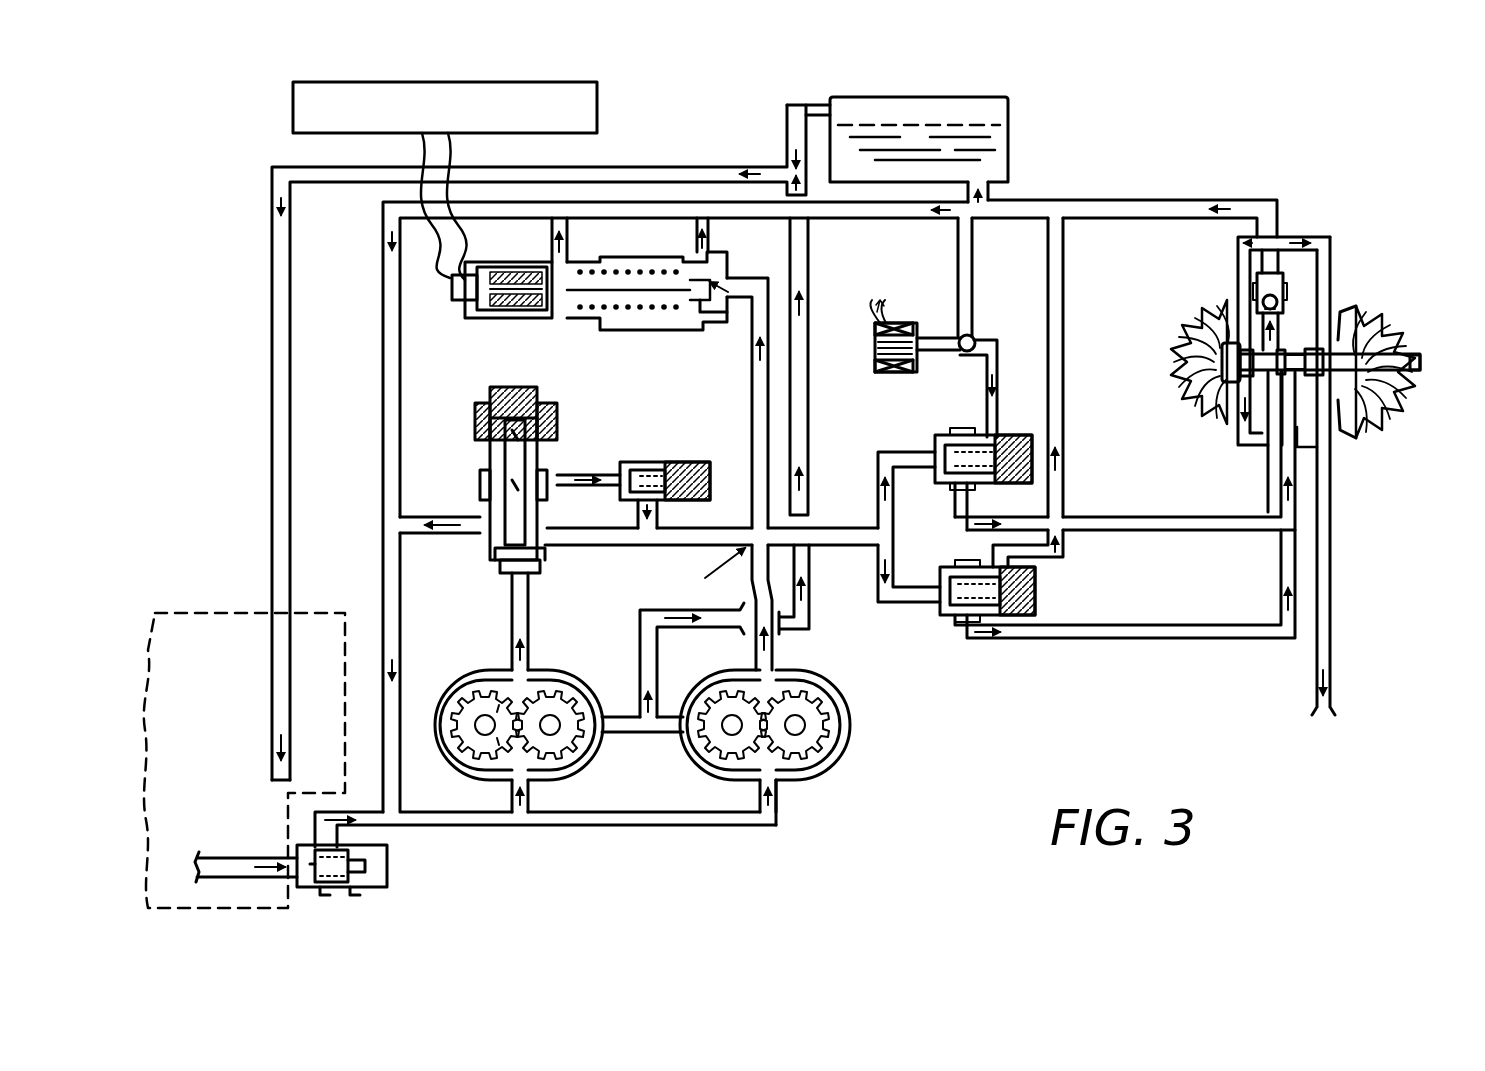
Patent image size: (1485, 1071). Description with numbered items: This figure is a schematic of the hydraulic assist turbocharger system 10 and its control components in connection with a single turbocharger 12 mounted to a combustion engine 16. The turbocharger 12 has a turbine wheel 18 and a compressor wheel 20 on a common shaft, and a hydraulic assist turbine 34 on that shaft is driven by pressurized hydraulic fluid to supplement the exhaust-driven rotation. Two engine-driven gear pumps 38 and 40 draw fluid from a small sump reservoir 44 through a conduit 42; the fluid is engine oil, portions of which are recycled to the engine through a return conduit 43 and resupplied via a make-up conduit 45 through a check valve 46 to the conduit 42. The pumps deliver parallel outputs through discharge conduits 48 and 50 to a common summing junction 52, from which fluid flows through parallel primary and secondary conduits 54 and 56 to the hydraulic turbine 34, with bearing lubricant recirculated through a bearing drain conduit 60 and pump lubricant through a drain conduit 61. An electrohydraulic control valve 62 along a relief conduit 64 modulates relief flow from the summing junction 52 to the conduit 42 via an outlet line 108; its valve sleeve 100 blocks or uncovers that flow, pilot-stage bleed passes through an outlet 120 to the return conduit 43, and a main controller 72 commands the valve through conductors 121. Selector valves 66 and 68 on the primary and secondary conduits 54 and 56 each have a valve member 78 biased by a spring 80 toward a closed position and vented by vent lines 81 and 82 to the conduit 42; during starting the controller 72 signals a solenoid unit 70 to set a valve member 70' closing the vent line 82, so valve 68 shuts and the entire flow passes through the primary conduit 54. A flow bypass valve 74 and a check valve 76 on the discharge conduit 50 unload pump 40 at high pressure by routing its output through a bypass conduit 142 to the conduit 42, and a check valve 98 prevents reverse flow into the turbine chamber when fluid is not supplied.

The hydraulic assist turbocharger system 10 is at (1362, 135).
The turbocharger 12 is at (1294, 453).
The combustion engine 16 is at (198, 605).
The turbine wheel 18 is at (1190, 395).
The compressor wheel 20 is at (1395, 330).
The hydraulic assist turbine 34 is at (1300, 340).
The gear pump 38 is at (815, 780).
The gear pump 40 is at (570, 770).
The conduit 42 is at (1160, 198).
The return conduit 43 is at (268, 330).
The sump reservoir 44 is at (1008, 150).
The make-up conduit 45 is at (238, 880).
The check valve 46 is at (350, 887).
The discharge conduit 48 is at (780, 640).
The discharge conduit 50 is at (505, 610).
The summing junction 52 is at (712, 576).
The primary conduit 54 is at (1115, 640).
The secondary conduit 56 is at (1195, 502).
The bearing drain conduit 60 is at (1330, 595).
The drain conduit 61 is at (635, 668).
The electrohydraulic control valve 62 is at (597, 293).
The relief conduit 64 is at (745, 380).
The selector valve 66 is at (1035, 595).
The selector valve 68 is at (1015, 435).
The solenoid unit 70 is at (895, 353).
The valve member 70' is at (994, 355).
The main controller 72 is at (597, 105).
The flow bypass valve 74 is at (557, 420).
The check valve 76 is at (700, 462).
The valve member 78 is at (945, 435).
The spring 80 is at (980, 483).
The vent line 81 is at (1063, 552).
The vent line 82 is at (958, 245).
The check valve 98 is at (1257, 300).
The valve sleeve 100 is at (672, 252).
The outlet line 108 is at (716, 230).
The outlet 120 is at (548, 243).
The conductors 121 is at (455, 162).
The bypass conduit 142 is at (445, 500).